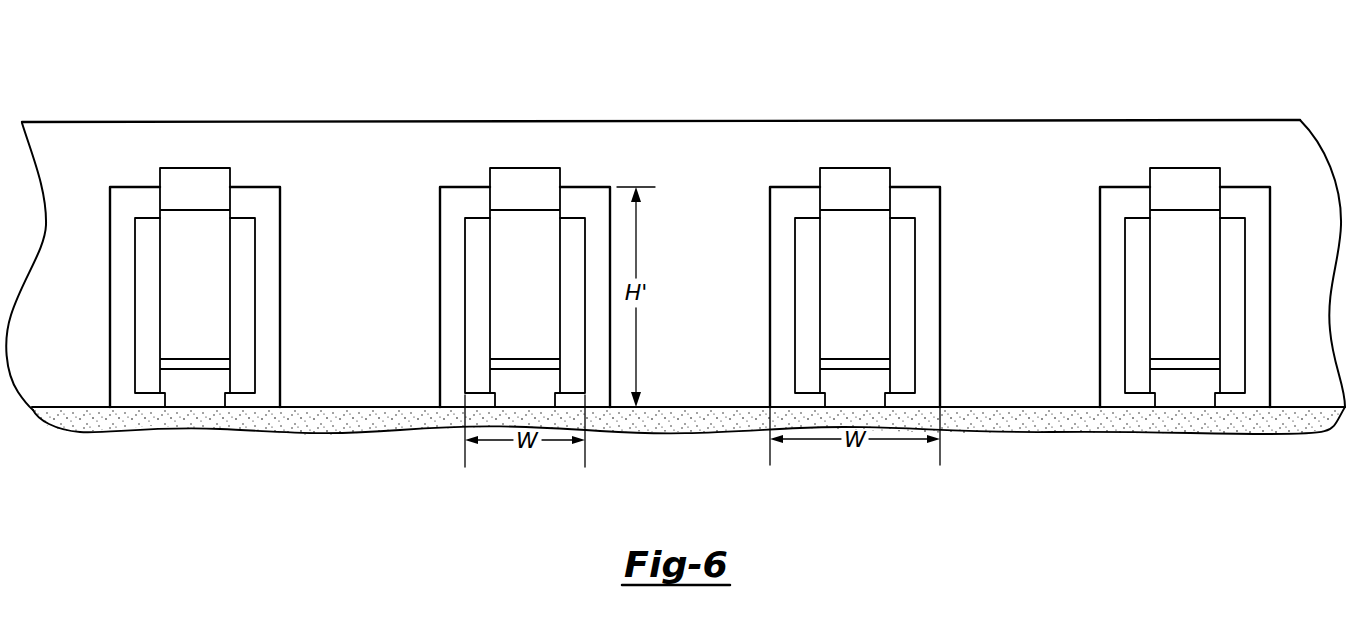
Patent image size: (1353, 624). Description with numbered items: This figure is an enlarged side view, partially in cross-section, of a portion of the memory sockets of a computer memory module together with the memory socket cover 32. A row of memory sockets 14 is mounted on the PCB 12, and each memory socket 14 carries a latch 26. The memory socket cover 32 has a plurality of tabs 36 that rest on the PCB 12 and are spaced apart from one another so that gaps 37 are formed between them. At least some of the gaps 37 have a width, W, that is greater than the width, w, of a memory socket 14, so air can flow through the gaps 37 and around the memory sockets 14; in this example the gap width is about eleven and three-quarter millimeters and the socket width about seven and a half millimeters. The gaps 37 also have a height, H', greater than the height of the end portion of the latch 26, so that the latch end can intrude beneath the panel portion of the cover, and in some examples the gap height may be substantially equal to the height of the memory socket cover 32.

The PCB 12 is at (78, 412).
The memory socket 14 is at (257, 377).
The latch 26 is at (680, 259).
The memory socket cover 32 is at (687, 120).
The tabs 36 is at (365, 382).
The gaps 37 is at (703, 271).